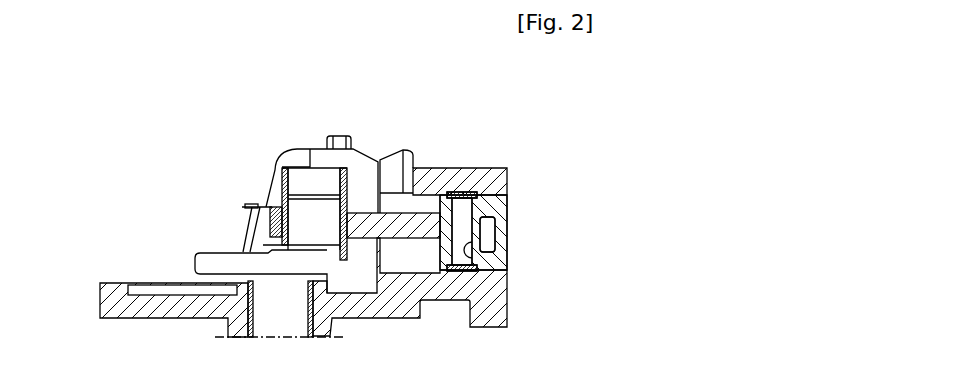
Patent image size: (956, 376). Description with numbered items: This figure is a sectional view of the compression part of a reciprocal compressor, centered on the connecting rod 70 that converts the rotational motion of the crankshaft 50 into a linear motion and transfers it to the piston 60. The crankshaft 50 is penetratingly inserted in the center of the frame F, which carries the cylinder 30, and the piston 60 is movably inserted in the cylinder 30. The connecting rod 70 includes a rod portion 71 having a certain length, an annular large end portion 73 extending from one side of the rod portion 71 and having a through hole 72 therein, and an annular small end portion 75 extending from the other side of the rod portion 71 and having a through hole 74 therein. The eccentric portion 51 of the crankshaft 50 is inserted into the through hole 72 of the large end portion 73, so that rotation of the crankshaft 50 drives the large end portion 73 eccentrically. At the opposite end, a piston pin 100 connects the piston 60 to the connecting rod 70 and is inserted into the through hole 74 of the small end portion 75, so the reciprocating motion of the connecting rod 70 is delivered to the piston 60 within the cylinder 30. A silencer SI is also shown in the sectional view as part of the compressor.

The frame F is at (133, 272).
The crankshaft 50 is at (244, 323).
The cylinder 30 is at (442, 183).
The piston 60 is at (495, 185).
The small end portion 75 is at (480, 230).
The through hole 74 is at (480, 265).
The piston pin 100 is at (455, 253).
The rod portion 71 is at (404, 222).
The connecting rod 70 is at (368, 212).
The silencer SI is at (320, 160).
The through hole 72 is at (287, 193).
The eccentric portion 51 is at (313, 210).
The large end portion 73 is at (272, 223).